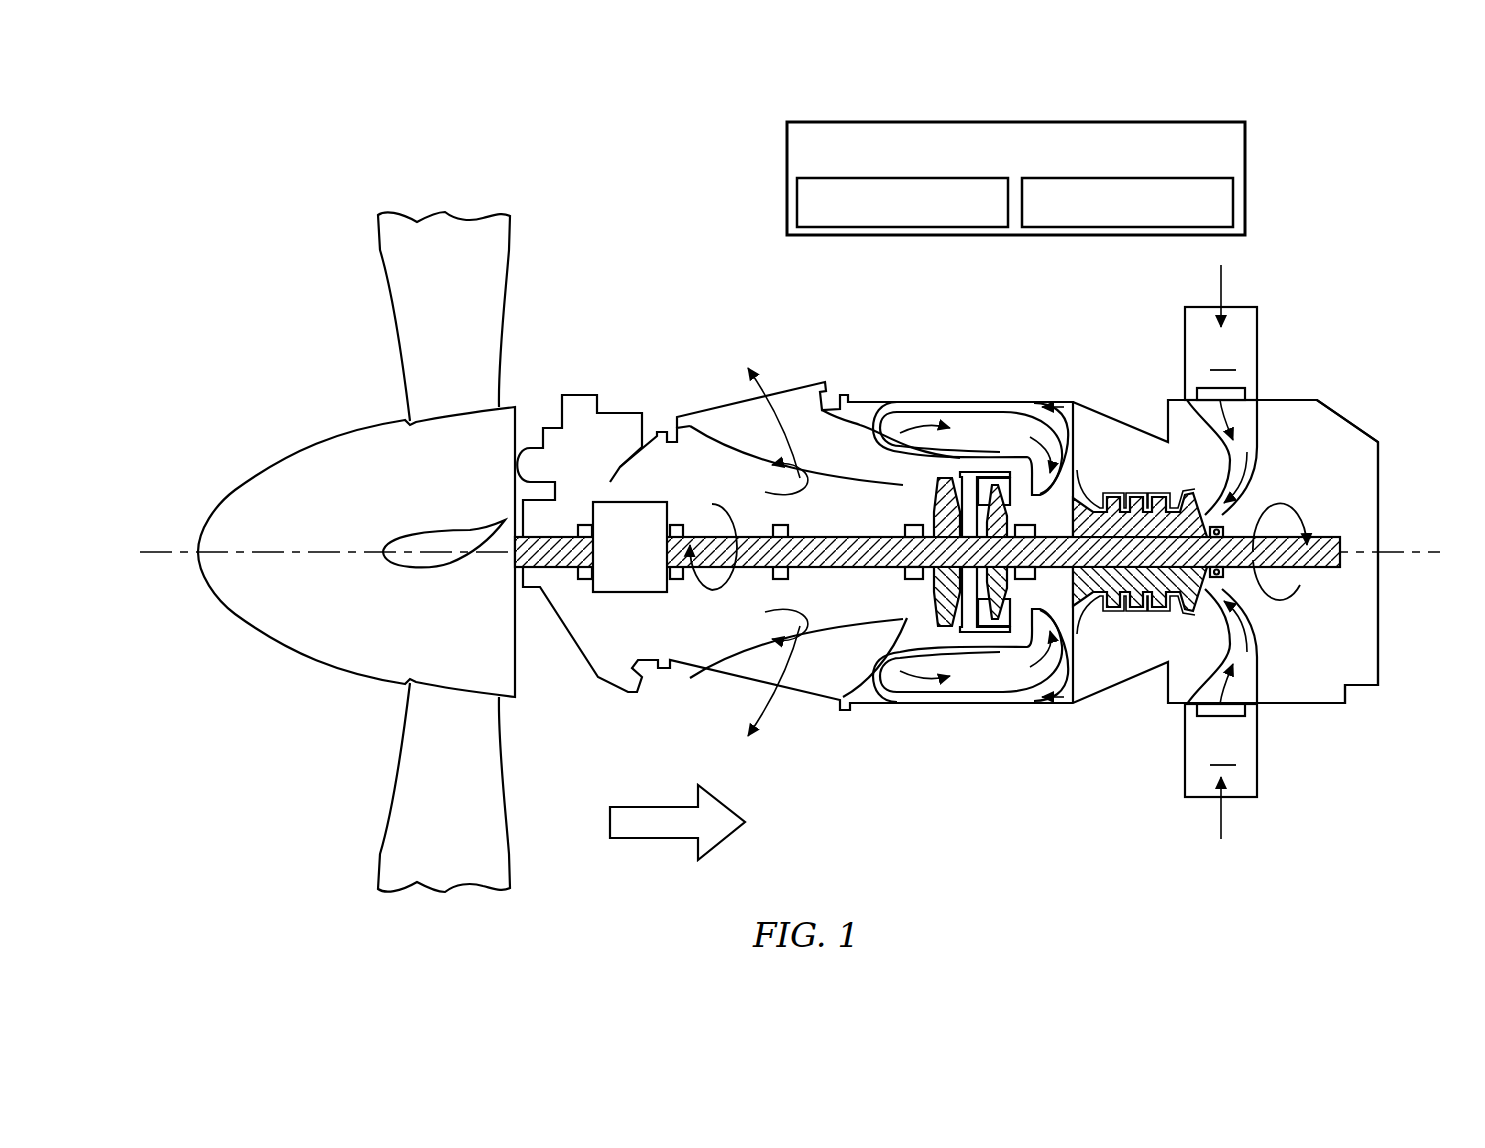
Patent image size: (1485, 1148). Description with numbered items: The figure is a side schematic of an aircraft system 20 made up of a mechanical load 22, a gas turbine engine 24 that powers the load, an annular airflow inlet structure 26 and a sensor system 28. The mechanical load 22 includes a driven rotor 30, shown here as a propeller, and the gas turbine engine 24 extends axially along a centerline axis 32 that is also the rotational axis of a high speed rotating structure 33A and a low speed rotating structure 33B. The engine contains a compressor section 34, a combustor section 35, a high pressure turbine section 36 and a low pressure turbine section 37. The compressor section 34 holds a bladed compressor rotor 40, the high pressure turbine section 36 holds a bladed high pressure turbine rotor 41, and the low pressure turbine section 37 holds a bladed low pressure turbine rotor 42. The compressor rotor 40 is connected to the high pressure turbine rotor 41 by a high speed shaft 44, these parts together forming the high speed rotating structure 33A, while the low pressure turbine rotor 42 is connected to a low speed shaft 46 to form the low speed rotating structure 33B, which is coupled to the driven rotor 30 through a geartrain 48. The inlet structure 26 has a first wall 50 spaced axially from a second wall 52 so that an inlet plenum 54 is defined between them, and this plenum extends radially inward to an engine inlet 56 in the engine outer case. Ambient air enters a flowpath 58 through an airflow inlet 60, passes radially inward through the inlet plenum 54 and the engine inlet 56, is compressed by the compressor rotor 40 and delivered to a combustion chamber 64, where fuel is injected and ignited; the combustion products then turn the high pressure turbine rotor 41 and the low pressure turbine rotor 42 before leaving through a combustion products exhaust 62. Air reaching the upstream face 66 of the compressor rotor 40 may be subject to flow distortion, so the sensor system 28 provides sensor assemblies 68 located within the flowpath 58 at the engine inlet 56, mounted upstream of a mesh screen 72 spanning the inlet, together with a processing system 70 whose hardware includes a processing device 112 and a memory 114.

The aircraft system 20 is at (784, 355).
The mechanical load 22 is at (388, 190).
The gas turbine engine 24 is at (665, 252).
The airflow inlet structure 26 is at (1246, 555).
The sensor system 28 is at (1350, 121).
The rotor 30 is at (408, 684).
The centerline axis 32 is at (155, 562).
The high speed rotating structure 33A is at (1335, 523).
The low speed rotating structure 33B is at (822, 576).
The compressor section 34 is at (1150, 630).
The combustor section 35 is at (920, 410).
The high pressure turbine section 36 is at (995, 458).
The low pressure turbine section 37 is at (967, 458).
The compressor rotor 40 is at (1147, 530).
The high pressure turbine rotor 41 is at (1022, 612).
The low pressure turbine rotor 42 is at (917, 606).
The high speed shaft 44 is at (1062, 590).
The low speed shaft 46 is at (760, 520).
The geartrain 48 is at (645, 490).
The first wall 50 is at (1246, 555).
The second wall 52 is at (1258, 350).
The inlet plenum 54 is at (1221, 552).
The engine inlet 56 is at (1291, 550).
The flowpath 58 is at (1243, 440).
The airflow inlet 60 is at (1247, 307).
The combustion products exhaust 62 is at (797, 383).
The combustion chamber 64 is at (1017, 428).
The upstream face 66 is at (1220, 505).
The sensor assemblies 68 is at (1200, 392).
The processing system 70 is at (1053, 186).
The mesh screen 72 is at (1253, 400).
The processing device 112 is at (890, 228).
The memory 114 is at (1085, 228).